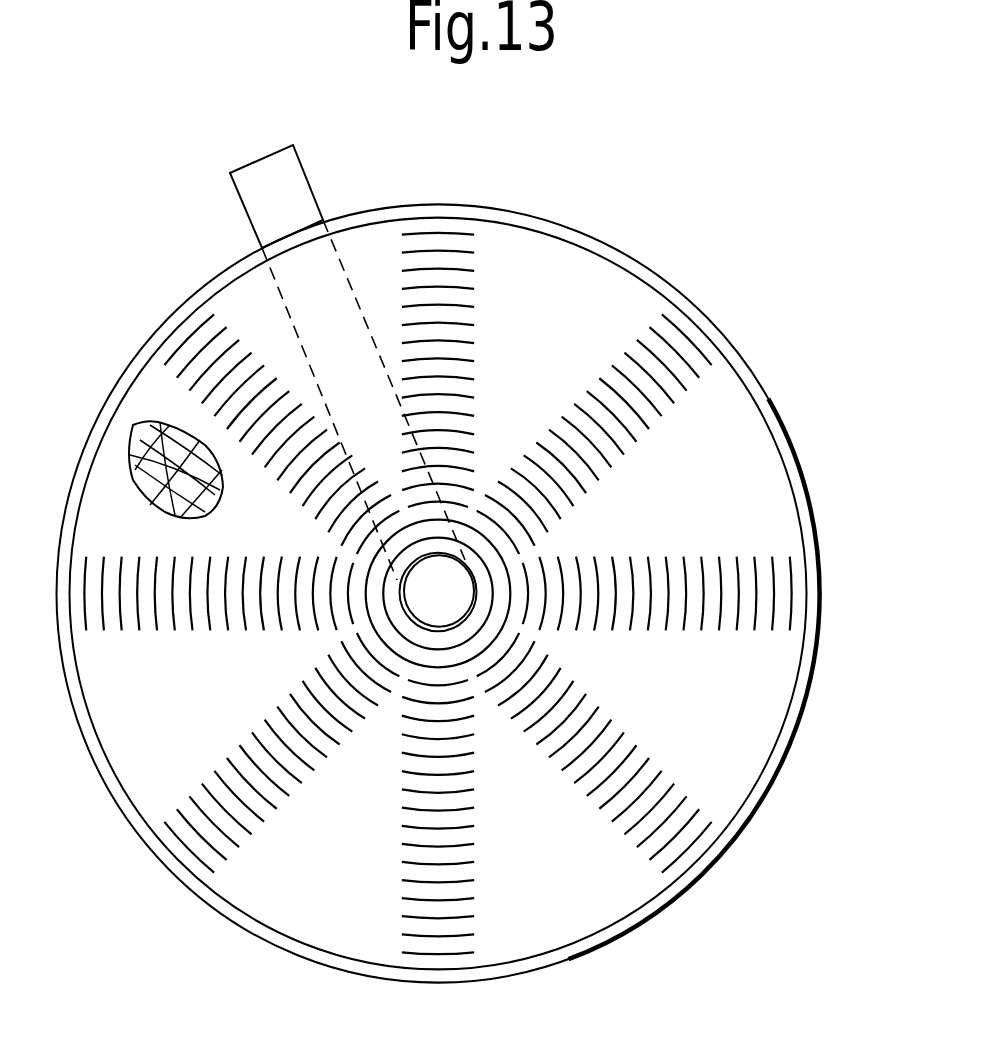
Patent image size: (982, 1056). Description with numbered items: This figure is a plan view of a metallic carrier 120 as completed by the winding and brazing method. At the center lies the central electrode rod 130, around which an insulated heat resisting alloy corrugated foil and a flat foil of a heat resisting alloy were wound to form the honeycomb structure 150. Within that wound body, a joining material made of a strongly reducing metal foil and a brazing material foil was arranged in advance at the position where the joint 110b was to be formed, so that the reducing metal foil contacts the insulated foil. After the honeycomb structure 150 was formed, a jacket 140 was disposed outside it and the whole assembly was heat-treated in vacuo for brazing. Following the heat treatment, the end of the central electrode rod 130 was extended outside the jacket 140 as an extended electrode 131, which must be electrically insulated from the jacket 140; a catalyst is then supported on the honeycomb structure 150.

The joint 110b is at (690, 330).
The metallic carrier 120 is at (807, 730).
The central electrode rod 130 is at (434, 607).
The extended electrode 131 is at (305, 178).
The jacket 140 is at (764, 387).
The honeycomb structure 150 is at (132, 435).